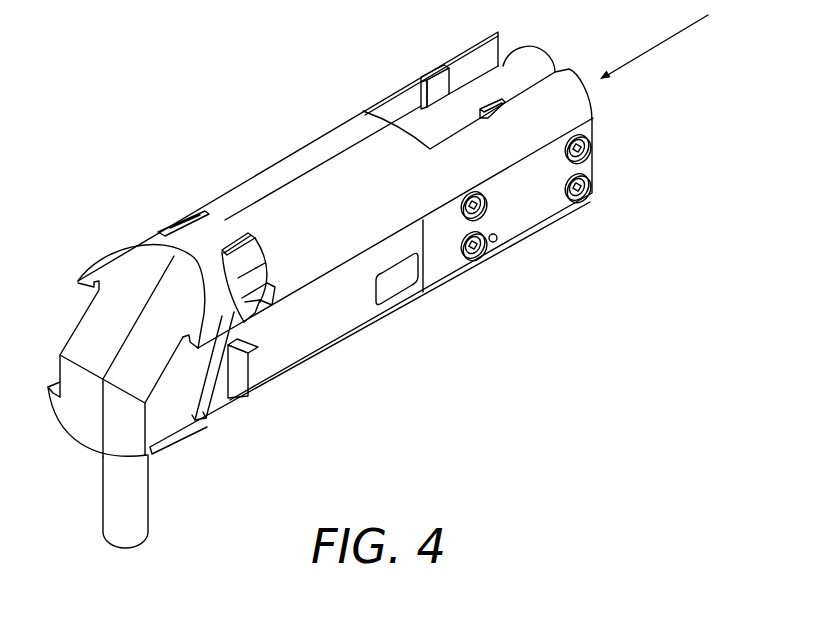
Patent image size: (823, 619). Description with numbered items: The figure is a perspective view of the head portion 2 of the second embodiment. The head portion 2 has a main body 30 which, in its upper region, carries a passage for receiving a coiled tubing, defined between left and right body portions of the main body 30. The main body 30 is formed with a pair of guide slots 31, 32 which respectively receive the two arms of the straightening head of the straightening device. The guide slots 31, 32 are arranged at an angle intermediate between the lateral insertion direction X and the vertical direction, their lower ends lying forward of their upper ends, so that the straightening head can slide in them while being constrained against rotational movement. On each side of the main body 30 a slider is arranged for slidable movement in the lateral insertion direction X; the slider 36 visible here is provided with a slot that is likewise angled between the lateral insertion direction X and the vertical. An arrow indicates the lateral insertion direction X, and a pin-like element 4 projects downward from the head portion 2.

The head portion 2 is at (466, 300).
The pin 4 is at (140, 510).
The main body 30 is at (283, 167).
The guide slot 31 is at (175, 217).
The guide slot 32 is at (268, 285).
The slider 36 is at (272, 357).
The lateral insertion direction X is at (655, 48).